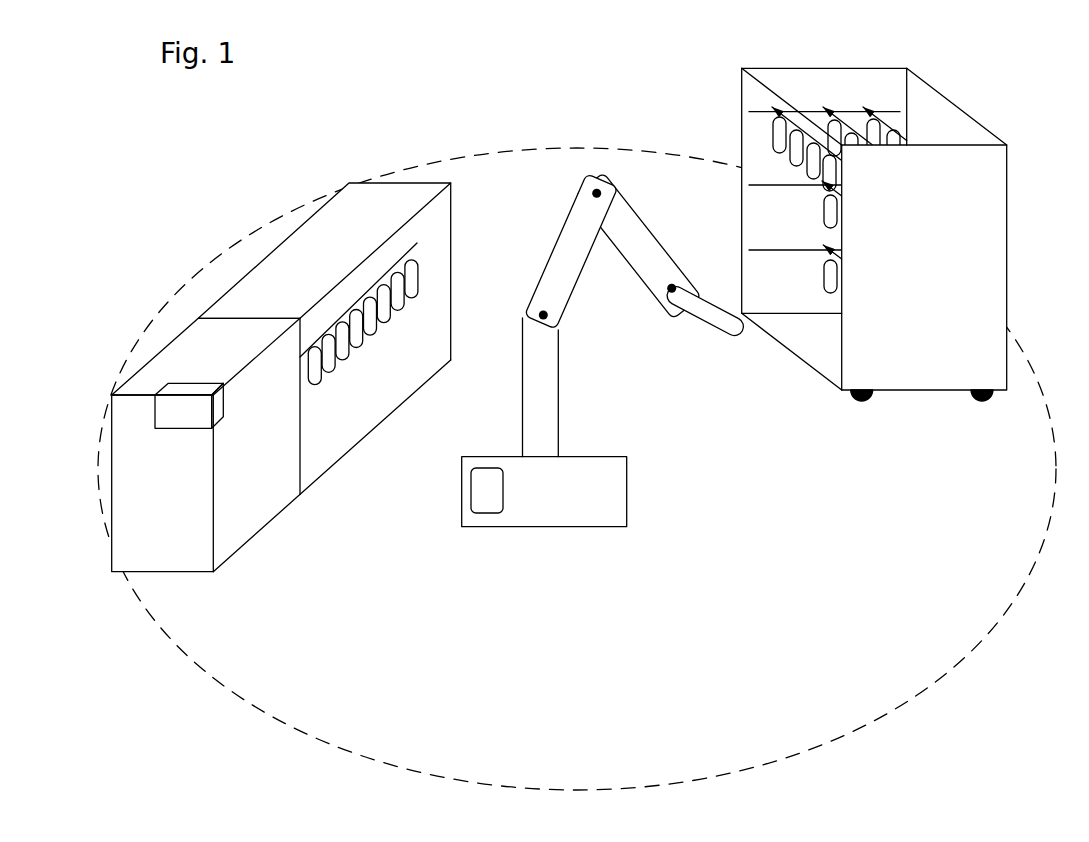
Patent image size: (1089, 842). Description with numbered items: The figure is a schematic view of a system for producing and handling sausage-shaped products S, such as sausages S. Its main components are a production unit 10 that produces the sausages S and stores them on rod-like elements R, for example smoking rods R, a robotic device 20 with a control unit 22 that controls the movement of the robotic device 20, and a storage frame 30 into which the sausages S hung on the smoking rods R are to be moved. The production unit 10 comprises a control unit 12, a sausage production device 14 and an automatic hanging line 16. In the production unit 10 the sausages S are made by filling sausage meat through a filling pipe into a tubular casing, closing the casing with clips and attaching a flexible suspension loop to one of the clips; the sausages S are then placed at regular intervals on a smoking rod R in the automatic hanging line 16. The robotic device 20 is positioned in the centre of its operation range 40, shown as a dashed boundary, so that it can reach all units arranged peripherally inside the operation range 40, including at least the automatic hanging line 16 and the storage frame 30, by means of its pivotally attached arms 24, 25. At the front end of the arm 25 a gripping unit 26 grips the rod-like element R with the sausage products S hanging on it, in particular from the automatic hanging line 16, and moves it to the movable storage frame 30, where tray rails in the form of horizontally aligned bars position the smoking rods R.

The production unit 10 is at (198, 213).
The control unit 12 is at (170, 380).
The sausage production device 14 is at (218, 343).
The automatic hanging line 16 is at (347, 355).
The rod-like element R is at (416, 243).
The sausage-shaped product S is at (418, 282).
The robotic device 20 is at (558, 295).
The control unit 22 is at (483, 492).
The arm 24 is at (582, 225).
The arm 25 is at (640, 250).
The gripping unit 26 is at (700, 317).
The storage frame 30 is at (1004, 135).
The operation range 40 is at (960, 655).